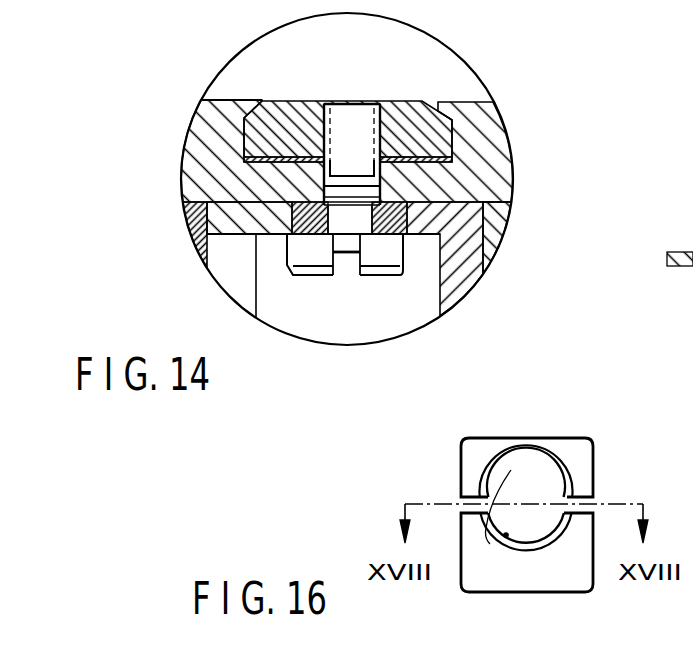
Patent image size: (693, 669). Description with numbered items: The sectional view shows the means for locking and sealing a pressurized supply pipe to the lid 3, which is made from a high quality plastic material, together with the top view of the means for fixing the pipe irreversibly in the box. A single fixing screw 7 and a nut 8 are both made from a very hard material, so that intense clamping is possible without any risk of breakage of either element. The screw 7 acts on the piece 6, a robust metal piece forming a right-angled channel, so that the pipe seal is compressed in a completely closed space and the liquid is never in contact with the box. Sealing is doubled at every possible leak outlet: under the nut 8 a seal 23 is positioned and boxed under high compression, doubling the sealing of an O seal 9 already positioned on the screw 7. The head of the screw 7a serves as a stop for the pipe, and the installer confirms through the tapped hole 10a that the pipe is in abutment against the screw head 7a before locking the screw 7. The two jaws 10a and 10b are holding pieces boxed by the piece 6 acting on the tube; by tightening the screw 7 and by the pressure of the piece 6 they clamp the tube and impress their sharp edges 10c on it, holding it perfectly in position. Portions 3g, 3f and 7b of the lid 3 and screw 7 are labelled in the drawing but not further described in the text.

In FIG. 14, the lid 3 is at (497, 132).
In FIG. 14, the body top portion 3g is at (222, 100).
In FIG. 14, the body lower portion 3f is at (495, 246).
In FIG. 14, the seal 23 is at (521, 178).
In FIG. 14, the piece 6 is at (468, 287).
In FIG. 14, the screw 7 is at (355, 120).
In FIG. 14, the screw head 7a is at (403, 262).
In FIG. 14, the bolt tip 7b is at (378, 203).
In FIG. 14, the nut 8 is at (398, 108).
In FIG. 14, the O seal 9 is at (307, 238).
In FIG. 16, the jaw 10a is at (572, 585).
In FIG. 16, the jaw 10b is at (577, 452).
In FIG. 16, the sharp edges 10c is at (506, 535).